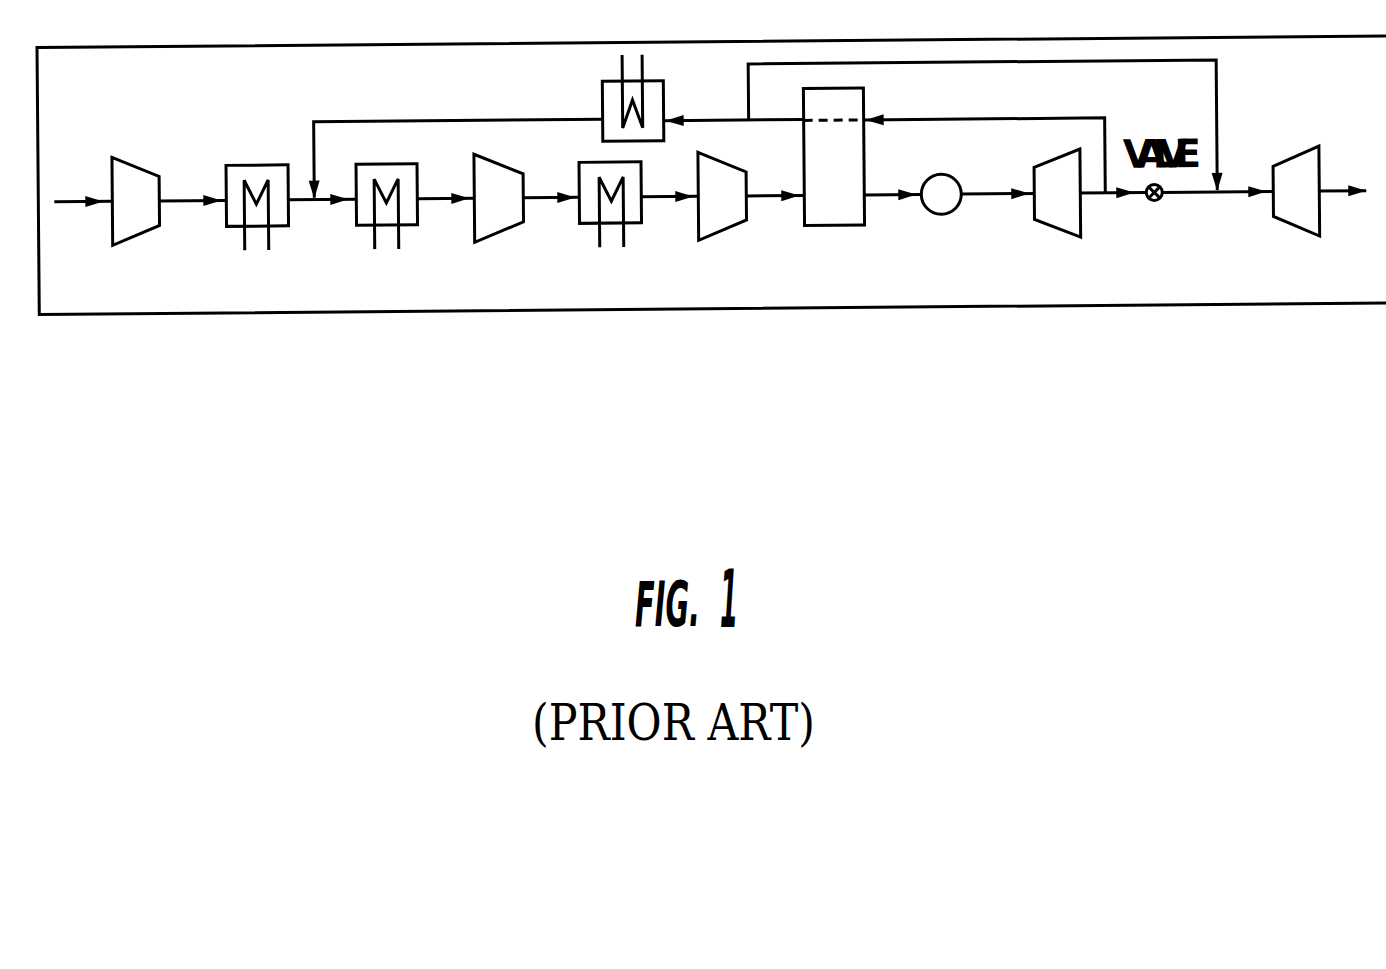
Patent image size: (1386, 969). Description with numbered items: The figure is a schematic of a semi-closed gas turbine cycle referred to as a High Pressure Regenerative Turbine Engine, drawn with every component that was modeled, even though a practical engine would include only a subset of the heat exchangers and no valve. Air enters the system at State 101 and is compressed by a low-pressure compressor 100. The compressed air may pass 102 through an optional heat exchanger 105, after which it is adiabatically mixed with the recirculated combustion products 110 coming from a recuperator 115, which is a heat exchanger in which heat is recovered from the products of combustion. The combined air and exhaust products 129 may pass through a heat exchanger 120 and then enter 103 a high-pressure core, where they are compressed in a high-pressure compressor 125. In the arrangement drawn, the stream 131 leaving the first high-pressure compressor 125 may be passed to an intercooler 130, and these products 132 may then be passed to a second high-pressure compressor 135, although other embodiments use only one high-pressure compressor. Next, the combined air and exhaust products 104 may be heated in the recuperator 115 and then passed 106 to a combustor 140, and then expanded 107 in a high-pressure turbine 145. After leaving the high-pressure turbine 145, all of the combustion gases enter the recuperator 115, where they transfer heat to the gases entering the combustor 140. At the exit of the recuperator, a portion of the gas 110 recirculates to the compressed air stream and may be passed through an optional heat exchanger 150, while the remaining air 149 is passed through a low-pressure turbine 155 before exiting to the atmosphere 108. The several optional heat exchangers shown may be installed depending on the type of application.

The low-pressure compressor 100 is at (134, 227).
The State 101 is at (83, 233).
The passage to optional heat exchanger 102 is at (193, 226).
The entry into high-pressure core 103 is at (446, 224).
The combined air and exhaust products 104 is at (775, 221).
The optional heat exchanger 105 is at (259, 231).
The passage to combustor 106 is at (893, 220).
The expansion in high-pressure turbine 107 is at (998, 218).
The exit to atmosphere 108 is at (1352, 215).
The recirculated combustion products 110 is at (456, 135).
The recuperator 115 is at (954, 185).
The heat exchanger 120 is at (387, 233).
The high-pressure compressor 125 is at (498, 227).
The combined air and exhaust products 129 is at (322, 226).
The intercooler 130 is at (610, 232).
The intermediate stream 131 is at (551, 223).
The intercooled products 132 is at (670, 221).
The second high-pressure compressor 135 is at (715, 225).
The combustor 140 is at (949, 229).
The high-pressure turbine 145 is at (1057, 217).
The remaining air 149 is at (943, 128).
The optional heat exchanger 150 is at (603, 98).
The low-pressure turbine 155 is at (1302, 216).